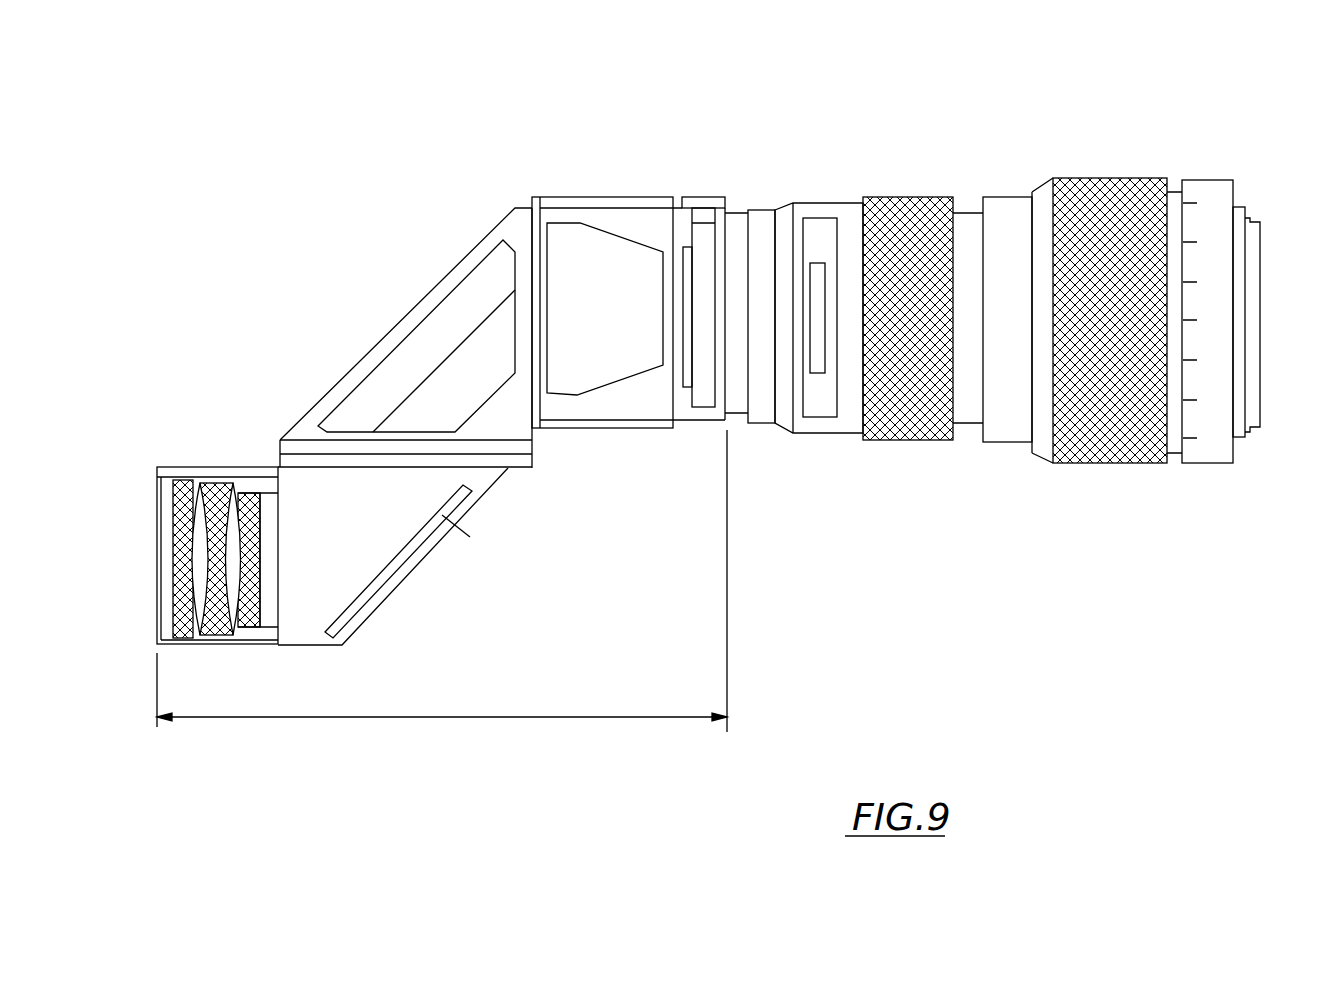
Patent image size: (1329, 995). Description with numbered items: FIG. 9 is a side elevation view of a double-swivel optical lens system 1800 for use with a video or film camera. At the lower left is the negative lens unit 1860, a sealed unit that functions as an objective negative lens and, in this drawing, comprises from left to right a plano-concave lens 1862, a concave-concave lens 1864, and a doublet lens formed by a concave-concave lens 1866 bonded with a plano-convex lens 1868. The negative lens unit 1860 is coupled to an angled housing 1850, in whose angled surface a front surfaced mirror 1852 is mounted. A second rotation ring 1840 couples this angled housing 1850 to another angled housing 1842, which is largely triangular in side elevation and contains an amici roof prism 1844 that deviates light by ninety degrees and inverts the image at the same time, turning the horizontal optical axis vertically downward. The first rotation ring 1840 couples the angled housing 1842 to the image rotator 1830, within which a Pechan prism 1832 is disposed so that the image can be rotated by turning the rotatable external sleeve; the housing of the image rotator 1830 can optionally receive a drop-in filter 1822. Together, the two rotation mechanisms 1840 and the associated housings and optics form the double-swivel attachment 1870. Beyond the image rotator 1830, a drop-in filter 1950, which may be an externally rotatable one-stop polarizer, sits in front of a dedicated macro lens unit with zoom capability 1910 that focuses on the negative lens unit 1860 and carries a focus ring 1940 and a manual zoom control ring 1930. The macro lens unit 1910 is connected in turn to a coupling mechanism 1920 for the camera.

The optical assembly 1800 is at (212, 222).
The drop-in filter system 1822 is at (703, 195).
The image rotator 1830 is at (625, 197).
The Pechan prism 1832 is at (628, 353).
The rotation mechanism 1840 is at (533, 430).
The angled housing 1842 is at (495, 240).
The amici roof prism 1844 is at (443, 328).
The angled housing 1850 is at (362, 550).
The front surfaced mirror 1852 is at (470, 537).
The negative lens unit 1860 is at (215, 465).
The plano-concave lens 1862 is at (183, 637).
The concave-concave lens 1864 is at (220, 637).
The concave-concave lens 1866 is at (247, 625).
The plano-convex lens 1868 is at (257, 573).
The double-swivel attachment 1870 is at (442, 581).
The macro lens unit with zoom capability 1910 is at (997, 178).
The coupling mechanism 1920 is at (1257, 247).
The manual zoom control ring 1930 is at (1098, 445).
The focus ring 1940 is at (920, 207).
The drop-in filter 1950 is at (820, 230).